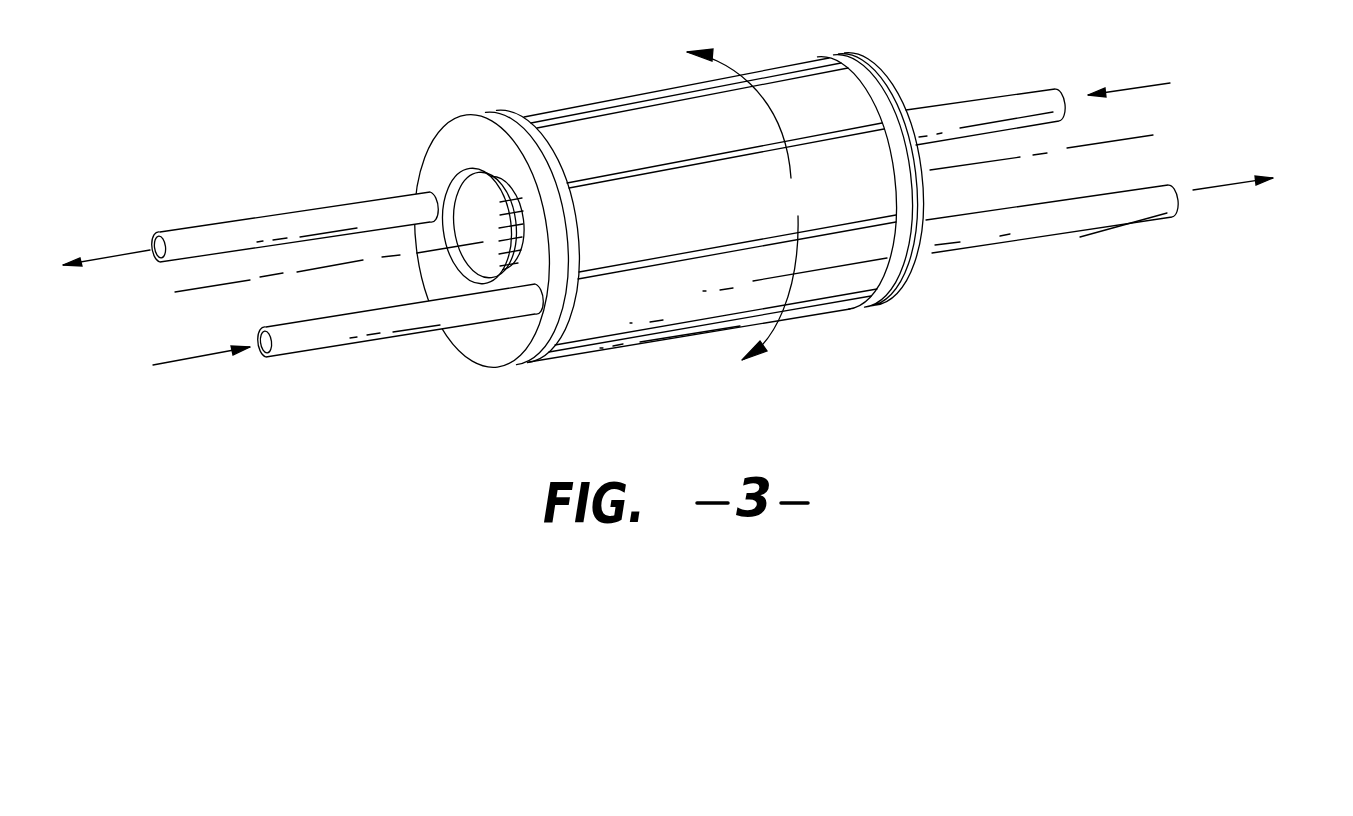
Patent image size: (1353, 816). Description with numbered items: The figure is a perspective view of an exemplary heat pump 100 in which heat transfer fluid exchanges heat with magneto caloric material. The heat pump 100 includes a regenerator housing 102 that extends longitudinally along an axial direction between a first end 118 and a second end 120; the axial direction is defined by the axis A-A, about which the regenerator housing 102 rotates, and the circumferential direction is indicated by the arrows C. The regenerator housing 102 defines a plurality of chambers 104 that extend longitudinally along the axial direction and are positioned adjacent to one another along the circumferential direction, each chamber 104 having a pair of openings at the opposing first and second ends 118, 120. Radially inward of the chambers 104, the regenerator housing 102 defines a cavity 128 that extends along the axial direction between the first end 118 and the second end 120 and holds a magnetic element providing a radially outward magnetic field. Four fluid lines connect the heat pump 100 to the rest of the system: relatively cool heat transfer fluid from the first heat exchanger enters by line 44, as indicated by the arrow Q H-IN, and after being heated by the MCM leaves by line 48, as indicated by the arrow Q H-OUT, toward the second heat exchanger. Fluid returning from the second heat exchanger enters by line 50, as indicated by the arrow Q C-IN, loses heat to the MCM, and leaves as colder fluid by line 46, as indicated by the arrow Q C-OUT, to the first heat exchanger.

The heat pump 100 is at (675, 220).
The regenerator housing 102 is at (812, 100).
The chambers 104 is at (589, 128).
The first end 118 is at (528, 70).
The second end 120 is at (866, 335).
The cavity 128 is at (462, 268).
The line 44 is at (307, 335).
The line 46 is at (275, 225).
The line 48 is at (1078, 212).
The line 50 is at (978, 110).